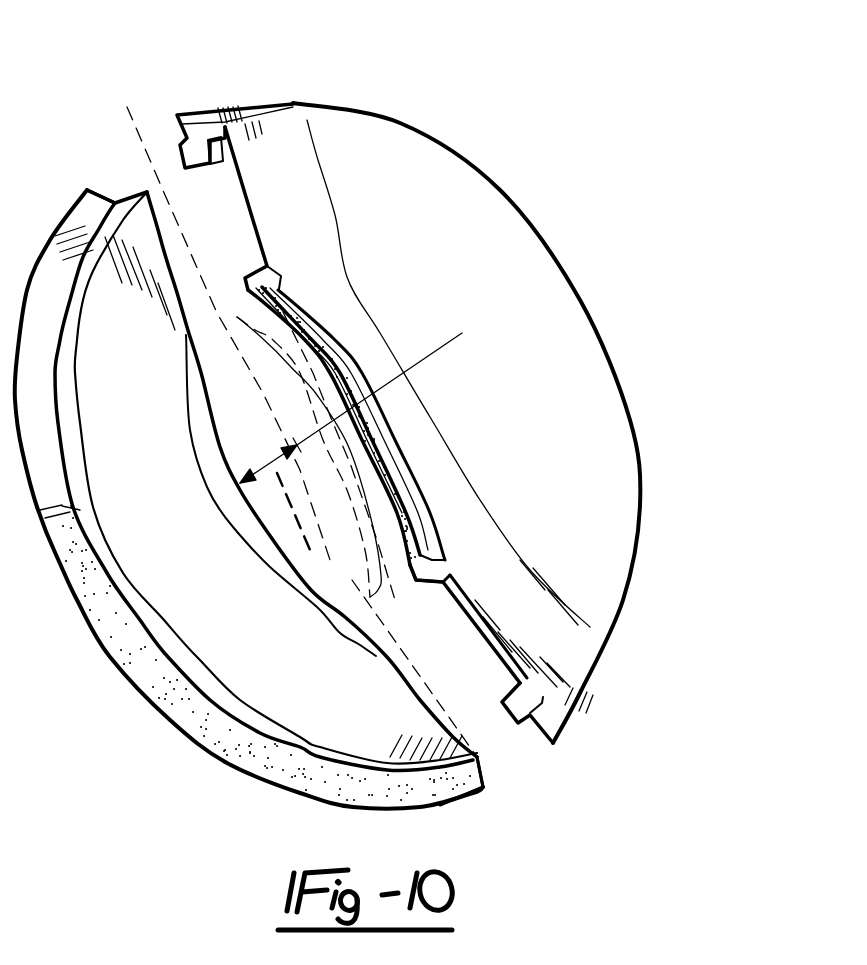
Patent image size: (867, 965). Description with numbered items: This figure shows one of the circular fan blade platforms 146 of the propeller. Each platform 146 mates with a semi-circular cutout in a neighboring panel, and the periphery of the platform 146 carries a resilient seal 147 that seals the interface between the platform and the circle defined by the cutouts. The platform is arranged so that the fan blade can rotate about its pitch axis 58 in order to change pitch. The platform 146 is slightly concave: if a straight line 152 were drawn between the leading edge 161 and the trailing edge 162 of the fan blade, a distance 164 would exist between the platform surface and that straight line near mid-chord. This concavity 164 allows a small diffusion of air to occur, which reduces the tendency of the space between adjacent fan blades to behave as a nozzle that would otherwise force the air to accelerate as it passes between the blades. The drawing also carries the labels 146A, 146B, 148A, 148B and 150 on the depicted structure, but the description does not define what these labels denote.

The fan blade platform 146 is at (650, 388).
The first housing half 146A is at (447, 239).
The second housing half 146B is at (157, 412).
The resilient seal 147 is at (228, 103).
The flange of second housing half 148A is at (260, 503).
The flange of first housing half 148B is at (338, 395).
The shoulder 150 is at (441, 567).
The straight line 152 is at (224, 317).
The pitch axis 58 is at (442, 347).
The leading edge 161 is at (147, 192).
The trailing edge 162 is at (480, 762).
The distance 164 is at (270, 470).